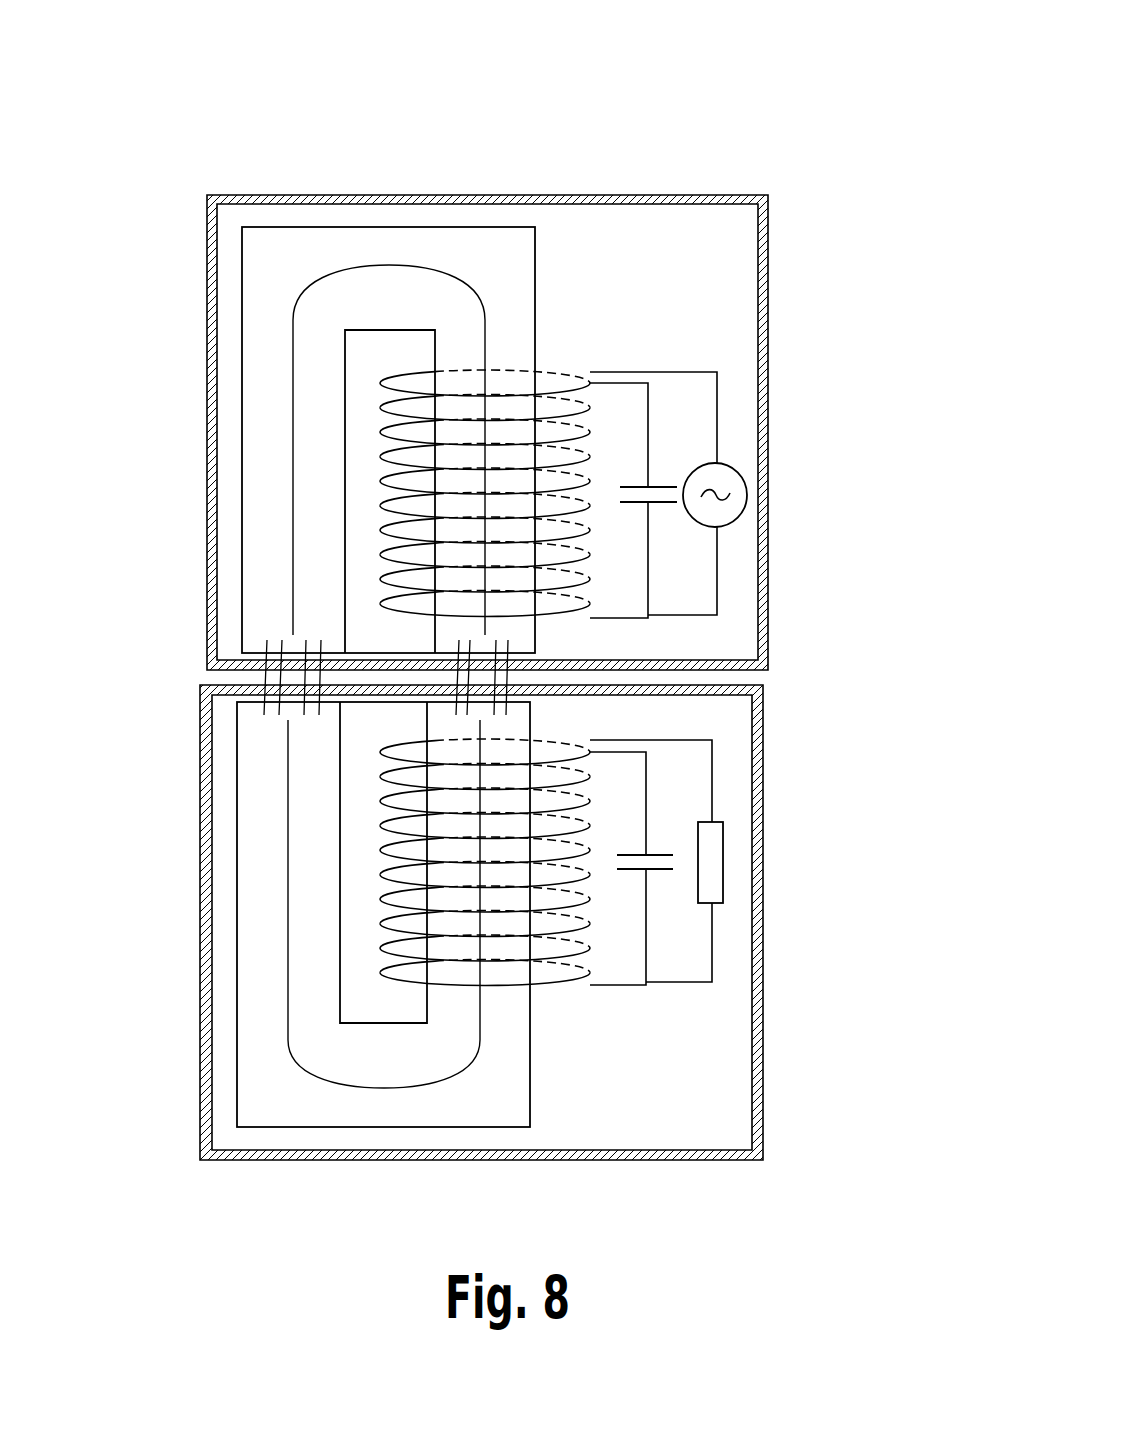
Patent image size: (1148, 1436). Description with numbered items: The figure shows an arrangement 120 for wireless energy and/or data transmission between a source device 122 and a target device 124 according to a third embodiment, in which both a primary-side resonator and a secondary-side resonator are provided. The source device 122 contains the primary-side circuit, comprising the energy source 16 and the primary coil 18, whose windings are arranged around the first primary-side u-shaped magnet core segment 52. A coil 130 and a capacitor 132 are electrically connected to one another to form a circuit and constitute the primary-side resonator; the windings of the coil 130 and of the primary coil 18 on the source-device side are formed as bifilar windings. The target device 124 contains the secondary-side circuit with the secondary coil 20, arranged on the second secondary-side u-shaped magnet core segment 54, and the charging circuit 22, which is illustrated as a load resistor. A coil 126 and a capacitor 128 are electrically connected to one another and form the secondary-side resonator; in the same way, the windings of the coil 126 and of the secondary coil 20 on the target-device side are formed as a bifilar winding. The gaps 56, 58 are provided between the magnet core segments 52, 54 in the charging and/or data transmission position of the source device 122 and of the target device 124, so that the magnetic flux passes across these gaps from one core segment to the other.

The arrangement 120 is at (671, 93).
The source device 122 is at (766, 306).
The target device 124 is at (763, 728).
The first primary-side u-shaped magnet core segment 52 is at (510, 270).
The second secondary-side u-shaped magnet core segment 54 is at (508, 726).
The primary coil 18 is at (590, 475).
The secondary coil 20 is at (580, 850).
The coil 130 is at (590, 540).
The capacitor 132 is at (656, 480).
The energy source 16 is at (732, 496).
The coil 126 is at (412, 752).
The capacitor 128 is at (655, 850).
The charging circuit 22 is at (712, 862).
The gap 56 is at (235, 678).
The gap 58 is at (548, 674).